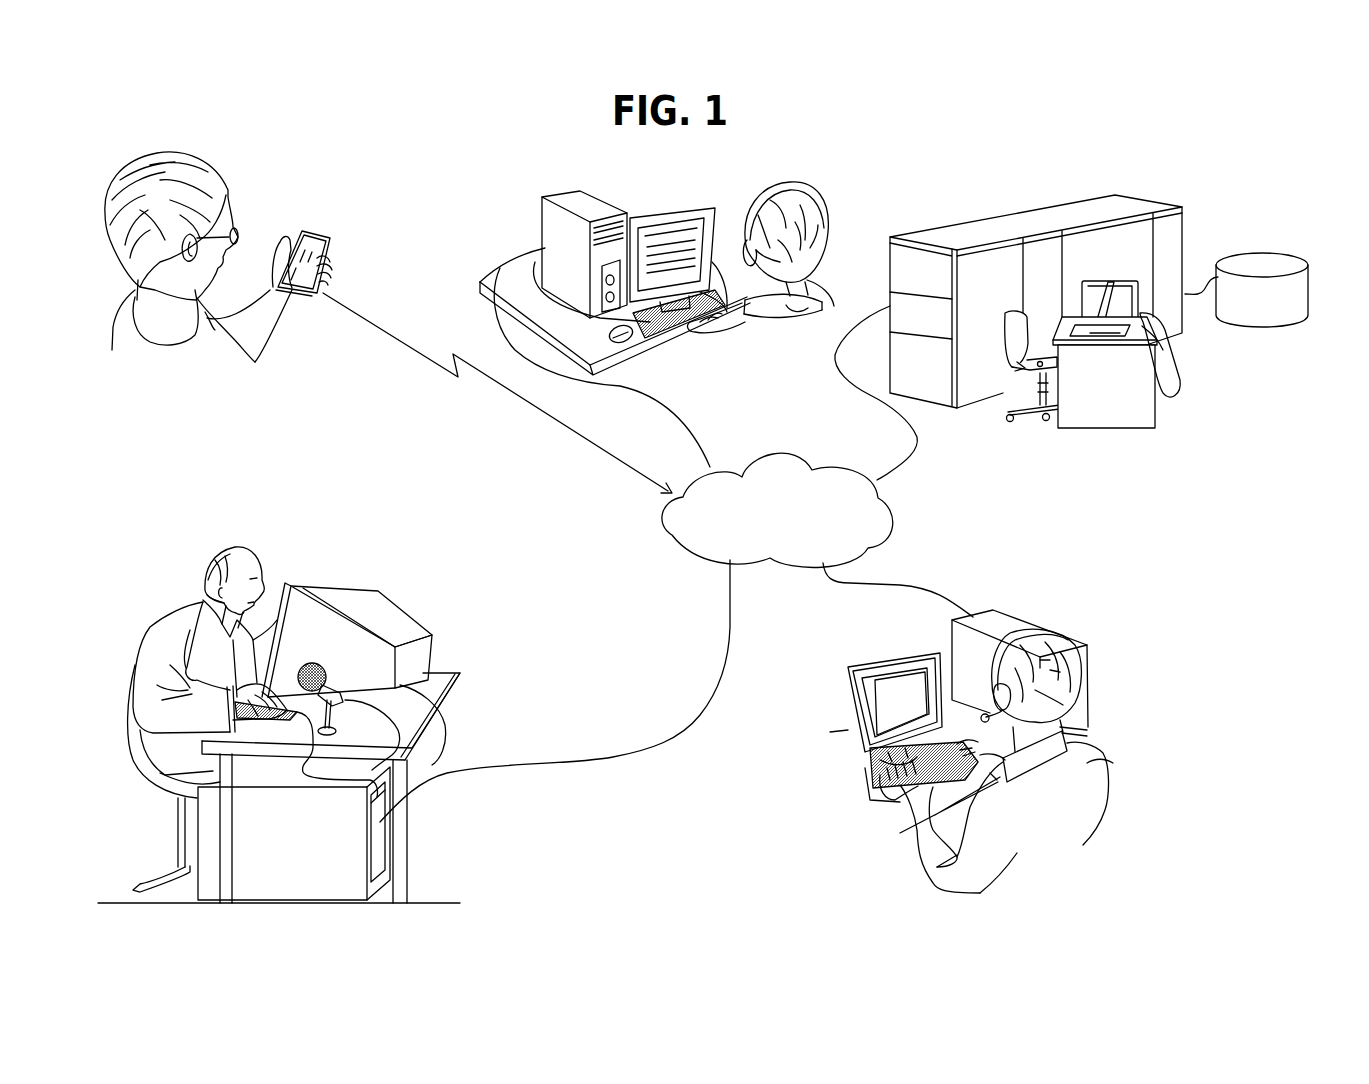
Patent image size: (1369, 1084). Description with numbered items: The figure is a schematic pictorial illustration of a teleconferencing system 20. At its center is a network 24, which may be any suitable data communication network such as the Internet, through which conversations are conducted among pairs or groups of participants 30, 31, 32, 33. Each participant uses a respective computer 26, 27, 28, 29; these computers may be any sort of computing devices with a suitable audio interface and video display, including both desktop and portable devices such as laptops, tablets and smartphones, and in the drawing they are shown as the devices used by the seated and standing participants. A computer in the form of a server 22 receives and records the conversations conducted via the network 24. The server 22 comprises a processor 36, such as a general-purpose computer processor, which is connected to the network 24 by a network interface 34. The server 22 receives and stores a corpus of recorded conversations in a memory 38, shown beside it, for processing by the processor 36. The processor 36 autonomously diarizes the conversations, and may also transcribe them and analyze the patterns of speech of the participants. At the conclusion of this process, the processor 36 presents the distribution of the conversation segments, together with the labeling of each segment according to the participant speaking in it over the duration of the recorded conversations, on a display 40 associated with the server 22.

The teleconferencing system 20 is at (1139, 143).
The server 22 is at (1292, 430).
The network 24 is at (762, 454).
The computer 26 is at (609, 204).
The computer 27 is at (996, 617).
The computer 28 is at (331, 265).
The computer 29 is at (350, 843).
The participant 30 is at (843, 202).
The participant 31 is at (1088, 758).
The participant 32 is at (200, 164).
The participant 33 is at (167, 624).
The network interface 34 is at (927, 294).
The processor 36 is at (1031, 208).
The memory 38 is at (1243, 254).
The display 40 is at (1112, 279).